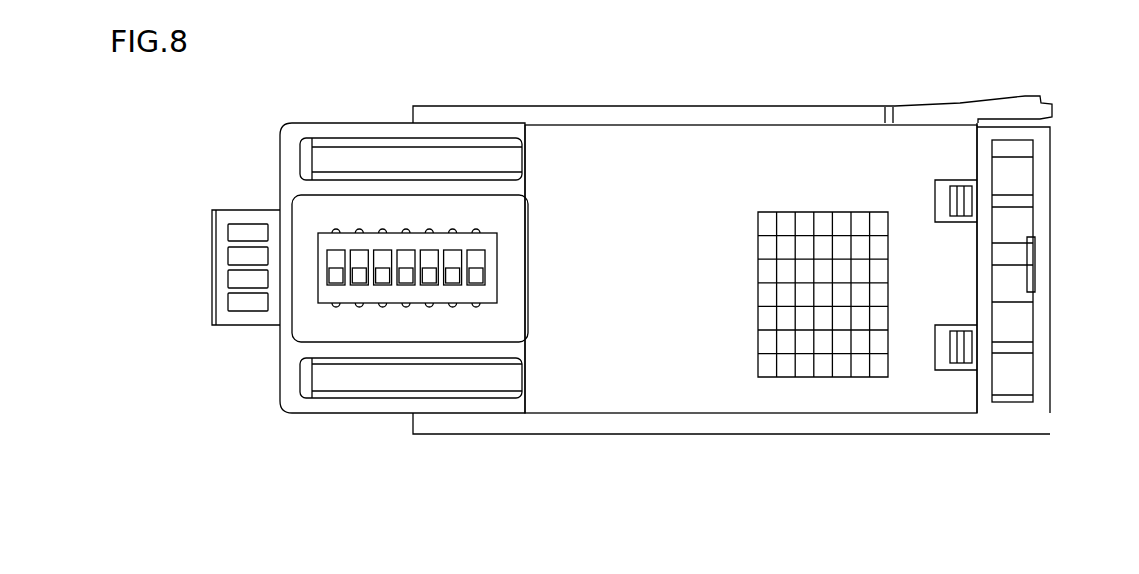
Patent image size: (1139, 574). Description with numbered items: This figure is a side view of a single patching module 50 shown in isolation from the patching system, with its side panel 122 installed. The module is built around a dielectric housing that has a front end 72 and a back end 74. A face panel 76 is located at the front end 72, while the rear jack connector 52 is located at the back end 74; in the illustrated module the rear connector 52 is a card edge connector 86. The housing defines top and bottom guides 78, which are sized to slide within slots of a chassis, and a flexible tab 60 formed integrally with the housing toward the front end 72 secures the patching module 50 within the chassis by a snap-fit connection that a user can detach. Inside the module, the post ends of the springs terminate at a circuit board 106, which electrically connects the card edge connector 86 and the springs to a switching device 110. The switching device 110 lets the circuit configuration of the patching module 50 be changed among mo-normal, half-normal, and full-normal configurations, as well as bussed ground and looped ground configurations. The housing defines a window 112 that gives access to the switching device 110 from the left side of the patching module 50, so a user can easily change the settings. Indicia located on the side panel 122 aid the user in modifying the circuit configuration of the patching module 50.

The patching module 50 is at (677, 80).
The rear jack connector 52 is at (232, 211).
The flexible tab 60 is at (1011, 96).
The front end 72 is at (1052, 155).
The back end 74 is at (280, 362).
The face panel 76 is at (1052, 372).
The top and bottom guides 78 is at (581, 106).
The card edge connector 86 is at (224, 311).
The circuit board 106 is at (472, 210).
The switching device 110 is at (395, 296).
The window 112 is at (322, 197).
The side panel 122 is at (855, 396).